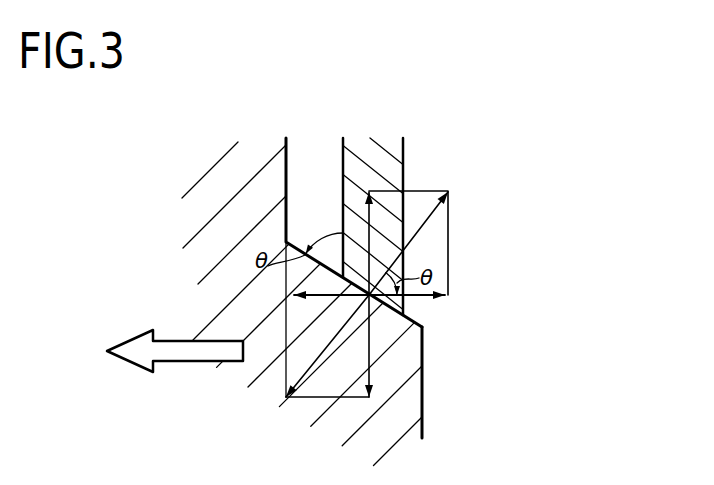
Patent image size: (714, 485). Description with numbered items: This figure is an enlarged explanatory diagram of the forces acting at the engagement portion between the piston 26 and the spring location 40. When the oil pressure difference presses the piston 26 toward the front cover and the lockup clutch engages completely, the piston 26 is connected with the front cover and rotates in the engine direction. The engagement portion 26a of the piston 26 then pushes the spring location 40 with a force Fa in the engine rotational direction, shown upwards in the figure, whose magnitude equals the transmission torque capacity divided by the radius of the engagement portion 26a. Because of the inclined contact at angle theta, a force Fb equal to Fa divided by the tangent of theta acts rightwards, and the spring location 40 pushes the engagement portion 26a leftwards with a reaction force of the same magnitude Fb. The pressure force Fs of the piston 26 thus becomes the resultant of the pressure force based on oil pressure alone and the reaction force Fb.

The piston 26 is at (208, 207).
The engagement portion 26a is at (398, 378).
The spring location 40 is at (392, 157).
The force Fa is at (372, 235).
The force Fb is at (283, 315).
The pressure force Fs is at (180, 352).